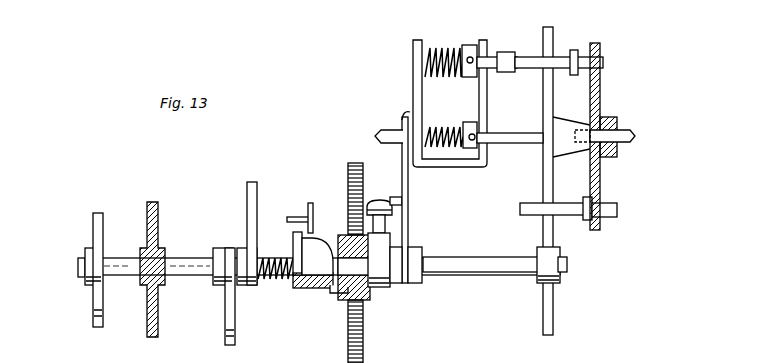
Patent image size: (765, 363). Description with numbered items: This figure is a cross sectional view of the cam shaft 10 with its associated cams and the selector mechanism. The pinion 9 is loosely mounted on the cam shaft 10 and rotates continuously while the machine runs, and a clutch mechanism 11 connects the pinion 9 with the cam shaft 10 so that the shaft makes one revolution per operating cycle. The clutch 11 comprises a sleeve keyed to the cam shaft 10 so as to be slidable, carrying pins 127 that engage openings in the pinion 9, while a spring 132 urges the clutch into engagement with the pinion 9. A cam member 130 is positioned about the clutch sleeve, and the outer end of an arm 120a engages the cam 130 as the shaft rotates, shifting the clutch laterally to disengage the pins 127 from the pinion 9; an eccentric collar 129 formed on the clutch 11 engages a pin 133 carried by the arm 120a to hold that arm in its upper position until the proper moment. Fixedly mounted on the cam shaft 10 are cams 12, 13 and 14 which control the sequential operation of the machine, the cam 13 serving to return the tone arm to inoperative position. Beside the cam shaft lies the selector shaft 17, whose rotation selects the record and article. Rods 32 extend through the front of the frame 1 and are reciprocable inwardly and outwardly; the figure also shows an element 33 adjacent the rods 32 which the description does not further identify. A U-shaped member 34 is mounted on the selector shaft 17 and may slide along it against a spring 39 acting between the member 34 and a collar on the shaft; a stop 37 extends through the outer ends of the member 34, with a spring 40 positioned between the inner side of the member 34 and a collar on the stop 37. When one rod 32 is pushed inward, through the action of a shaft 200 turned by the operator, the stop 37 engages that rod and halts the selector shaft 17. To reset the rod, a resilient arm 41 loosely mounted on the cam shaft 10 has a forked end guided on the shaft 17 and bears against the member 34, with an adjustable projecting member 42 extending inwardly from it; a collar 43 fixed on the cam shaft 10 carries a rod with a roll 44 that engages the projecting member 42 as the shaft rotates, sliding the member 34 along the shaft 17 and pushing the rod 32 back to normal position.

The frame 1 is at (148, 330).
The pinion 9 is at (352, 163).
The cam shaft 10 is at (178, 259).
The clutch mechanism 11 is at (318, 288).
The cam 12 is at (226, 316).
The cam 13 is at (93, 224).
The cam 14 is at (248, 201).
The selector shaft 17 is at (384, 134).
The rods 32 is at (558, 60).
The plate 33 is at (600, 88).
The U-shaped member 34 is at (487, 100).
The stop 37 is at (496, 53).
The spring 39 is at (430, 123).
The spring 40 is at (435, 48).
The resilient arm 41 is at (408, 185).
The adjustable projecting member 42 is at (402, 205).
The collar 43 is at (390, 229).
The roll or annular member 44 is at (377, 200).
The arm 120a is at (310, 203).
The pins 127 is at (333, 293).
The eccentric collar 129 is at (293, 236).
The cam member 130 is at (318, 250).
The spring 132 is at (270, 281).
The pin 133 is at (295, 217).
The shaft 200 is at (623, 142).